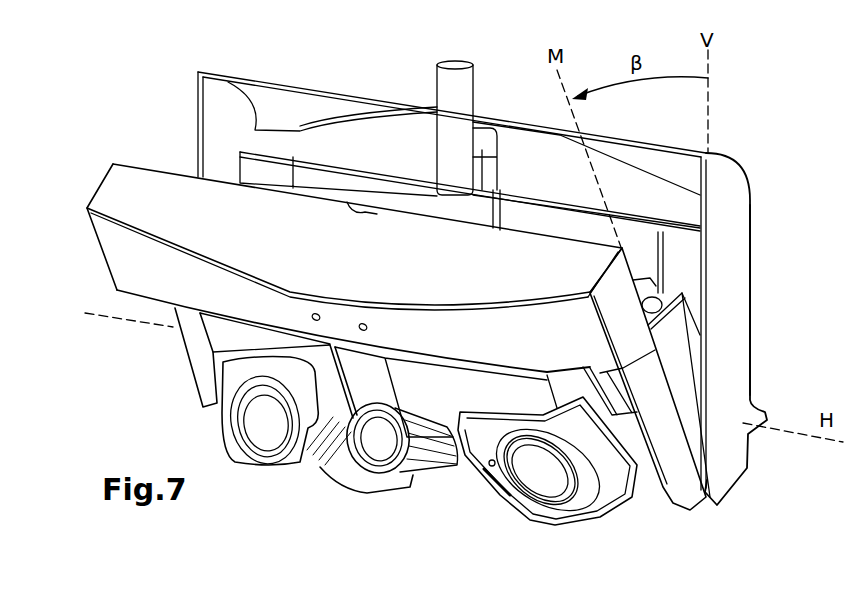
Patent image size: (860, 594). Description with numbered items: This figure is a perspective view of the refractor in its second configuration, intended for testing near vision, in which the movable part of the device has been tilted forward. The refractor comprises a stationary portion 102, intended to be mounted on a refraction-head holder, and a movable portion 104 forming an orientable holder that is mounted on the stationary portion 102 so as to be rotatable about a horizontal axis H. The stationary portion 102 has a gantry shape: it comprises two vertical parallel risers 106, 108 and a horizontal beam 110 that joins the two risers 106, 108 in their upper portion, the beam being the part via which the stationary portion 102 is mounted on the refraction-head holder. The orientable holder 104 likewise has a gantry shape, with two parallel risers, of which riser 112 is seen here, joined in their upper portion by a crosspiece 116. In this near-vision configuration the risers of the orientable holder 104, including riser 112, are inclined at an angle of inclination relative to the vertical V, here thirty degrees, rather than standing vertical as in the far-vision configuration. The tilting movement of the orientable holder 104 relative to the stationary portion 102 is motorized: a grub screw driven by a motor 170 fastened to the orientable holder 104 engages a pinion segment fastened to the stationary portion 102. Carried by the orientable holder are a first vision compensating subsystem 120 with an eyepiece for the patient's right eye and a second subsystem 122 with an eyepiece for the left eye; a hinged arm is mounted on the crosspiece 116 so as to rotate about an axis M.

The stationary portion 102 is at (731, 221).
The movable portion 104 is at (128, 267).
The vertical riser 106 is at (730, 327).
The vertical riser 108 is at (198, 102).
The horizontal beam 110 is at (343, 96).
The riser 112 is at (673, 455).
The crosspiece 116 is at (128, 183).
The first vision compensating subsystem 120 is at (414, 491).
The second subsystem 122 is at (494, 496).
The motor 170 is at (662, 300).